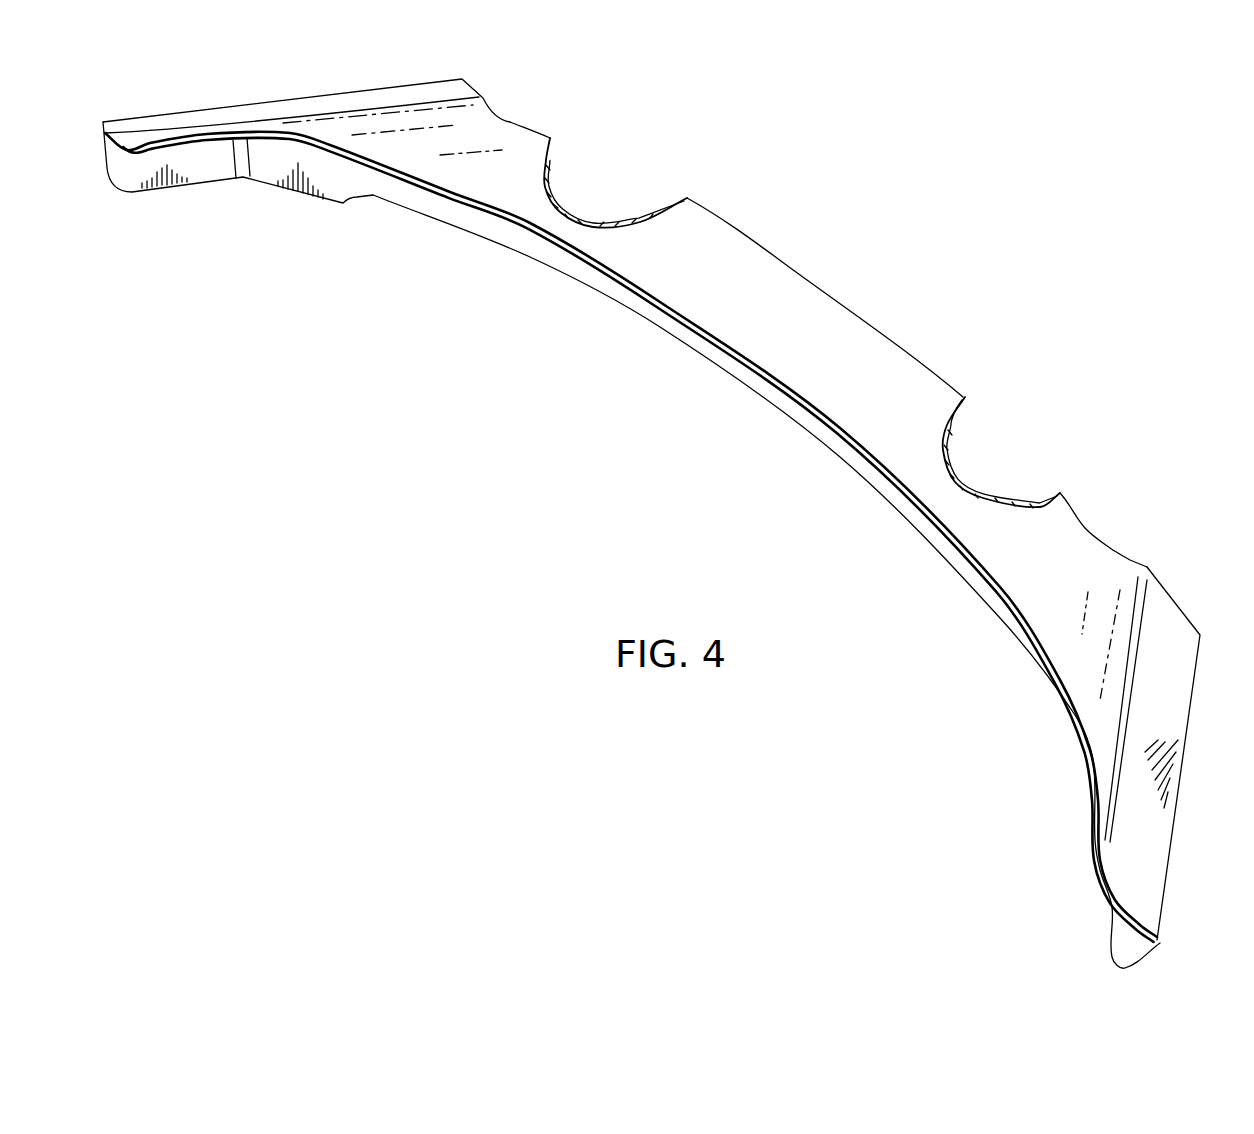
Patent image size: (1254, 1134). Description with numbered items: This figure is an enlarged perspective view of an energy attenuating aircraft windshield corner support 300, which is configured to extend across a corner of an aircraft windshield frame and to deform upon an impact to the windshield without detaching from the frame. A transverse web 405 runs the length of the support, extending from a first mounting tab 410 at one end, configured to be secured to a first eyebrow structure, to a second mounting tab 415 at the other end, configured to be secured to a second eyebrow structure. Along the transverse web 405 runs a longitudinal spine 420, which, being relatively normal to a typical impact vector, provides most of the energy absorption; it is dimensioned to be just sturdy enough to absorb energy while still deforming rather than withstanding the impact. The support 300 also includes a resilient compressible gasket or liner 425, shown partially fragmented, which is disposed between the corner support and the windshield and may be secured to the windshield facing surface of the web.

The energy attenuating aircraft windshield corner support 300 is at (955, 195).
The transverse web 405 is at (797, 285).
The first mounting tab 410 is at (197, 168).
The second mounting tab 415 is at (1122, 940).
The longitudinal spine 420 is at (518, 242).
The liner 425 is at (605, 173).